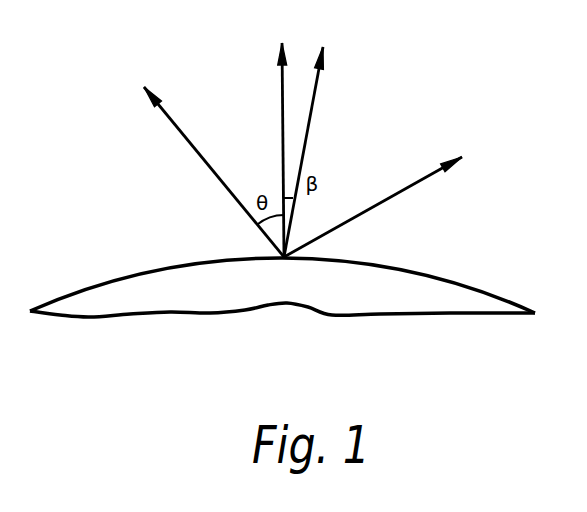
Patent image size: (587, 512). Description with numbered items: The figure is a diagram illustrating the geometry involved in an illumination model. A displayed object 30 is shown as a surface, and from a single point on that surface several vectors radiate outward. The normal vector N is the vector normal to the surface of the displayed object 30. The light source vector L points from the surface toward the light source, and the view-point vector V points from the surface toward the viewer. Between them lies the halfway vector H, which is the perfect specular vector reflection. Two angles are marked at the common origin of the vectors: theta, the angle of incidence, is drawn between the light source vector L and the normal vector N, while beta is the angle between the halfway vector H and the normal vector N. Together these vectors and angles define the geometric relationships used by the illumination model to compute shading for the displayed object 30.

The displayed object 30 is at (197, 301).
The light source vector L is at (146, 58).
The normal vector N is at (291, 12).
The halfway vector H is at (334, 14).
The view-point vector V is at (486, 130).